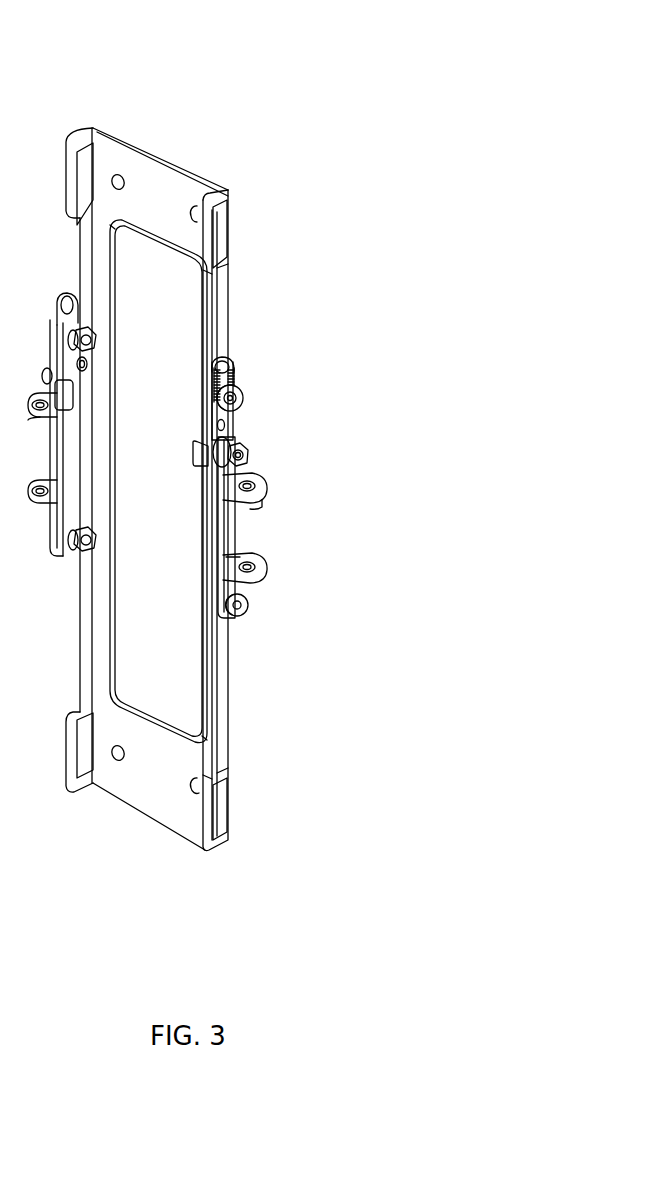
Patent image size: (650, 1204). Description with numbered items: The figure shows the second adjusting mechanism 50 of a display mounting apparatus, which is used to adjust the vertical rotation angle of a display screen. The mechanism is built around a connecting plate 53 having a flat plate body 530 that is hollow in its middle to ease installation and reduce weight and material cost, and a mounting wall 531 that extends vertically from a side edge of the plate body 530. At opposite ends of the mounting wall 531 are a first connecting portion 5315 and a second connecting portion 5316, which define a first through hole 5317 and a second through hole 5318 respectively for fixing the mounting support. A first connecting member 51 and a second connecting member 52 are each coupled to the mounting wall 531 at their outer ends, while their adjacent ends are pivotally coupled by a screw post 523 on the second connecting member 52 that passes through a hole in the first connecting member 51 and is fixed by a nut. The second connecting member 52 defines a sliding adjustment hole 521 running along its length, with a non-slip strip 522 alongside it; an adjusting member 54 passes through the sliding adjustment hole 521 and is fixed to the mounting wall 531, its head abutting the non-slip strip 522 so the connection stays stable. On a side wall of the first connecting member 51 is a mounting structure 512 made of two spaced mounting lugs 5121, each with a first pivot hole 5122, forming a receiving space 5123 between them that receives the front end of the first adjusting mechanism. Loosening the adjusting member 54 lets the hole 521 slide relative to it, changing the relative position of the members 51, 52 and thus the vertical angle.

The second adjusting mechanism 50 is at (131, 68).
The connecting plate 53 is at (375, 120).
The plate body 530 is at (173, 168).
The mounting wall 531 is at (230, 190).
The first connecting portion 5315 is at (223, 273).
The second connecting portion 5316 is at (227, 835).
The first through hole 5317 is at (222, 238).
The second through hole 5318 is at (220, 798).
The first connecting member 51 is at (247, 467).
The mounting structure 512 is at (363, 505).
The mounting lug 5121 is at (265, 493).
The first pivot hole 5122 is at (253, 490).
The receiving space 5123 is at (252, 572).
The second connecting member 52 is at (233, 425).
The sliding adjustment hole 521 is at (232, 377).
The non-slip strip 522 is at (233, 368).
The screw post 523 is at (243, 457).
The adjusting member 54 is at (240, 400).